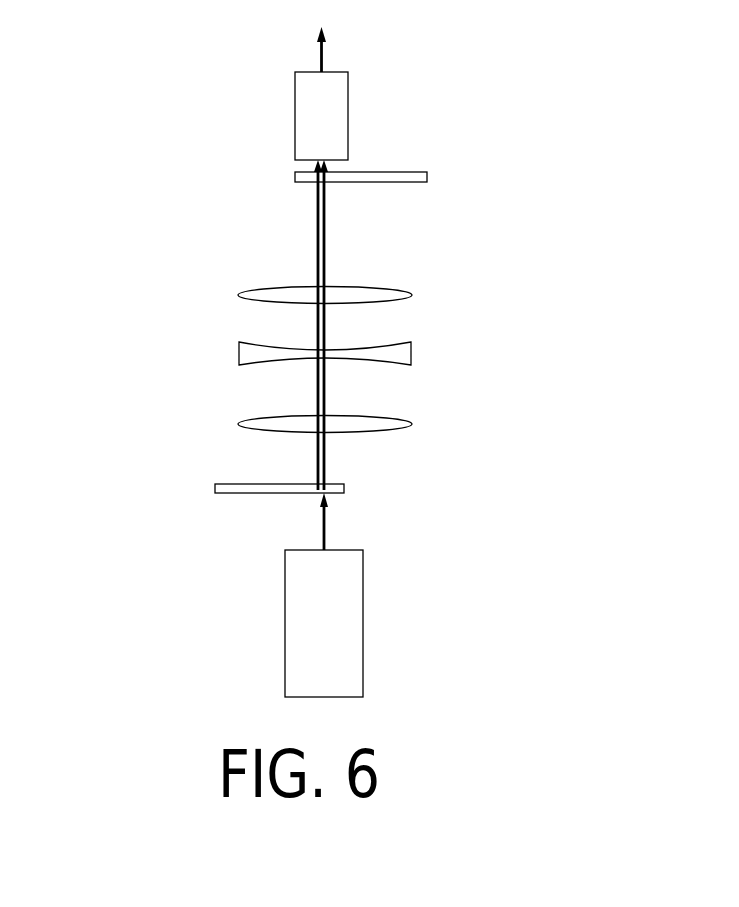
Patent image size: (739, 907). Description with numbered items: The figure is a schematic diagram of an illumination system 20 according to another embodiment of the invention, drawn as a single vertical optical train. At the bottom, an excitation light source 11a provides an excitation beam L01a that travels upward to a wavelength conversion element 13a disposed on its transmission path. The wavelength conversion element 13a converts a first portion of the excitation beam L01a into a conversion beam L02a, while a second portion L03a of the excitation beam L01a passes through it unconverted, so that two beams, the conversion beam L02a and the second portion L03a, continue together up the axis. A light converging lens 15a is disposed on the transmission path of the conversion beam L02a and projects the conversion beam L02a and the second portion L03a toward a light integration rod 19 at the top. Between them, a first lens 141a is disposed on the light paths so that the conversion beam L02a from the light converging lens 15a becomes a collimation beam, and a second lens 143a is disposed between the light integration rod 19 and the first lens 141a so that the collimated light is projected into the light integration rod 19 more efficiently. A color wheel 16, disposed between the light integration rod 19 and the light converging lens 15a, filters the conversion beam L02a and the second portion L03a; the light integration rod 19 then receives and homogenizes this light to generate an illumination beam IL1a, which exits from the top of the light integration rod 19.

The illumination system 20 is at (96, 82).
The excitation light source 11a is at (363, 621).
The wavelength conversion element 13a is at (217, 487).
The light converging lens 15a is at (247, 422).
The first lens 141a is at (253, 355).
The second lens 143a is at (252, 294).
The color wheel 16 is at (408, 178).
The light integration rod 19 is at (348, 97).
The excitation beam L01a is at (326, 519).
The conversion beam L02a is at (326, 247).
The second portion of the excitation beam L03a is at (315, 223).
The illumination beam IL1a is at (323, 52).